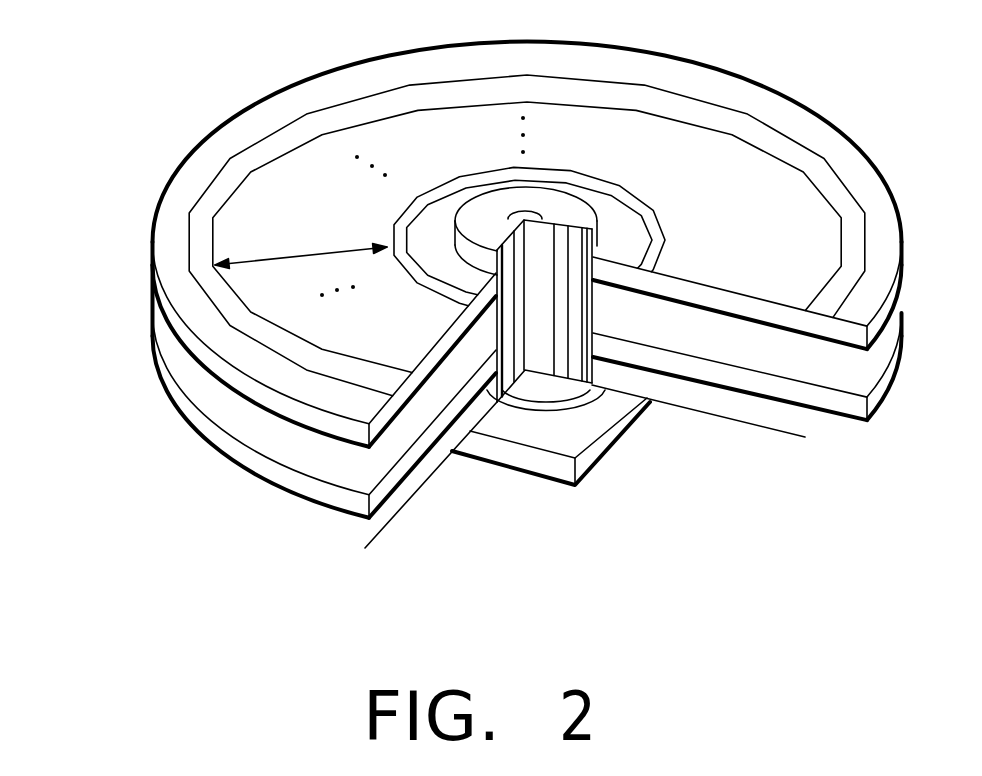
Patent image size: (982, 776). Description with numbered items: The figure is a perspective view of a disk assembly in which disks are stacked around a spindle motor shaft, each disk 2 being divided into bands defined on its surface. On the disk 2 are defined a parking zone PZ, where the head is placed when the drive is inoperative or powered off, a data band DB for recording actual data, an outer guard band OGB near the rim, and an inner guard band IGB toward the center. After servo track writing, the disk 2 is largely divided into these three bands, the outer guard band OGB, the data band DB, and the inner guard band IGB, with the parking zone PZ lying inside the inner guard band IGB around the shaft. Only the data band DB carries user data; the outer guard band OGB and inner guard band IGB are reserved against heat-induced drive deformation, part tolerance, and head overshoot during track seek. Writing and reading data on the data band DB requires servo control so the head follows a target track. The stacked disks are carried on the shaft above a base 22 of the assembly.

The disk 2 is at (788, 98).
The base plate / turntable 22 is at (535, 466).
The outer guard band OGB is at (193, 237).
The inner guard band IGB is at (457, 173).
The parking zone PZ is at (502, 231).
The data band DB is at (301, 244).